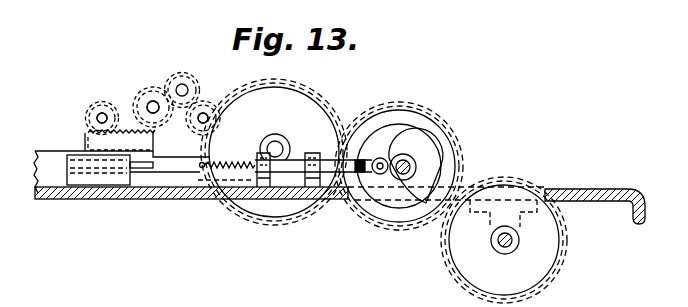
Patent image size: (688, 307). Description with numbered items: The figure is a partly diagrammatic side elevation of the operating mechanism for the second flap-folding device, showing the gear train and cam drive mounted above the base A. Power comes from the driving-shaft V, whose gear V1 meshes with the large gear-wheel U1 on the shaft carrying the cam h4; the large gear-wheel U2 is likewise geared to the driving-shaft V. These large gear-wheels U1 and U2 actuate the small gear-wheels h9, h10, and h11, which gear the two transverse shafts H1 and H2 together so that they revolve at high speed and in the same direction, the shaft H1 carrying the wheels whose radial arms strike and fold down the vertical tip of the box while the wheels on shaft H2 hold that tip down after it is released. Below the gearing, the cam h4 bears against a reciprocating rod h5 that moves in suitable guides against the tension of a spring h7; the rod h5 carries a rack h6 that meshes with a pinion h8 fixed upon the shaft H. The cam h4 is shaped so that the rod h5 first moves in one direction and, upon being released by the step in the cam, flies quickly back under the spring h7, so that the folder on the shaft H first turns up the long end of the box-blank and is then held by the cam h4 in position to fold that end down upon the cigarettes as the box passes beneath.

The base plate A is at (185, 199).
The shaft H is at (97, 118).
The shaft H1 is at (150, 103).
The shaft H2 is at (212, 108).
The cam h4 is at (414, 167).
The rod h5 is at (168, 172).
The rack h6 is at (87, 136).
The spring h7 is at (258, 158).
The pinion h8 is at (101, 110).
The small gear-wheel h9 is at (207, 105).
The small gear-wheel h10 is at (185, 83).
The small gear-wheel h11 is at (153, 101).
The large gear-wheel U2 is at (274, 152).
The large gear-wheel U1 is at (430, 135).
The driving-shaft V is at (504, 249).
The gear V1 is at (504, 240).